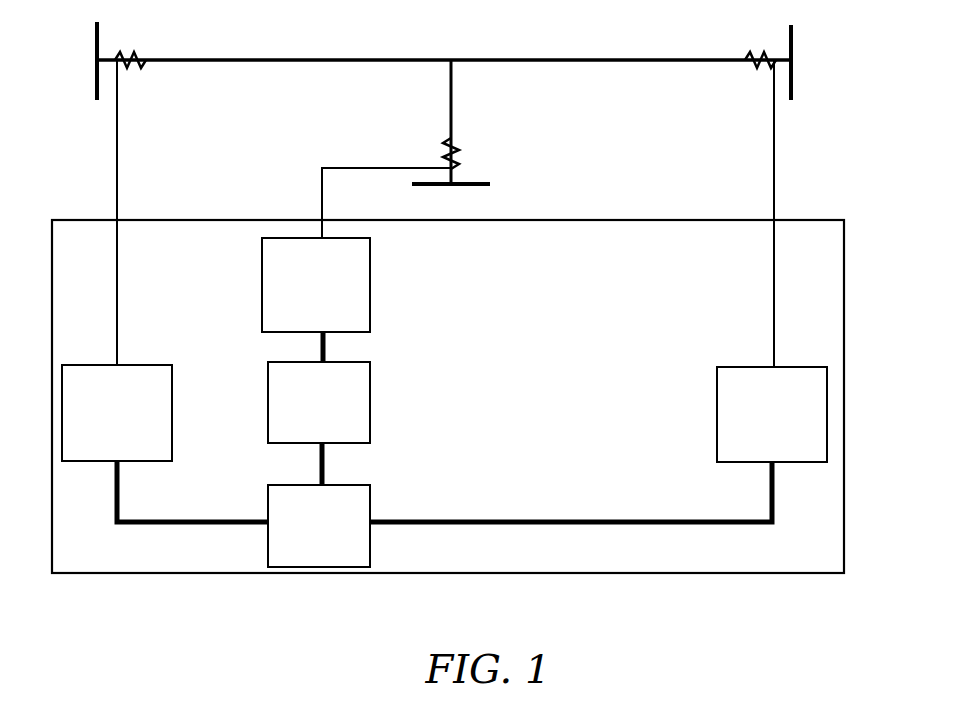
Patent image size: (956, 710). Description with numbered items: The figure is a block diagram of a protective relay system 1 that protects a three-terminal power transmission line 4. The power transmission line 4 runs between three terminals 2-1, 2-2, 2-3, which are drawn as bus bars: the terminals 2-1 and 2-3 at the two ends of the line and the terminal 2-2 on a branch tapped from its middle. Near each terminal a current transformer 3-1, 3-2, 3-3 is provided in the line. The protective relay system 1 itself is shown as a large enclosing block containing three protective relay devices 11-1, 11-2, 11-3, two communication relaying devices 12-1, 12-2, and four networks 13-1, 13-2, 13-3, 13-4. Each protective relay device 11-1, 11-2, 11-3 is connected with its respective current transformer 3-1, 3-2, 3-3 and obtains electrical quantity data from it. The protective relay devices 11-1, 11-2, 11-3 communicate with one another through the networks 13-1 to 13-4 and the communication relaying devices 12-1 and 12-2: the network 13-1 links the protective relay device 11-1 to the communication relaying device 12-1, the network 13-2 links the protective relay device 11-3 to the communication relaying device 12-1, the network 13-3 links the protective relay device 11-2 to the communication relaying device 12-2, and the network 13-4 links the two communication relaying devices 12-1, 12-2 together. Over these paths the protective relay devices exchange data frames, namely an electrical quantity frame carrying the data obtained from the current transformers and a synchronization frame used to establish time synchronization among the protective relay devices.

The protective relay system 1 is at (668, 220).
The terminal 2-1 is at (95, 70).
The terminal 2-2 is at (463, 188).
The terminal 2-3 is at (794, 80).
The current transformer 3-1 is at (140, 54).
The current transformer 3-2 is at (459, 148).
The current transformer 3-3 is at (751, 55).
The power transmission line 4 is at (397, 60).
The protective relay device 11-1 is at (148, 365).
The protective relay device 11-2 is at (371, 292).
The protective relay device 11-3 is at (747, 365).
The communication relaying device 12-1 is at (372, 508).
The communication relaying device 12-2 is at (372, 396).
The network 13-1 is at (155, 518).
The network 13-2 is at (605, 520).
The network 13-3 is at (327, 356).
The network 13-4 is at (326, 467).